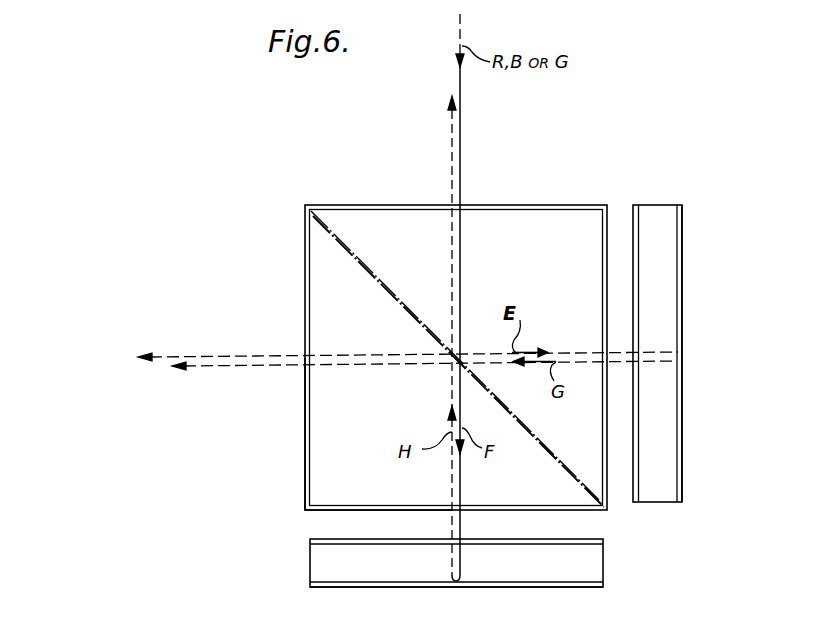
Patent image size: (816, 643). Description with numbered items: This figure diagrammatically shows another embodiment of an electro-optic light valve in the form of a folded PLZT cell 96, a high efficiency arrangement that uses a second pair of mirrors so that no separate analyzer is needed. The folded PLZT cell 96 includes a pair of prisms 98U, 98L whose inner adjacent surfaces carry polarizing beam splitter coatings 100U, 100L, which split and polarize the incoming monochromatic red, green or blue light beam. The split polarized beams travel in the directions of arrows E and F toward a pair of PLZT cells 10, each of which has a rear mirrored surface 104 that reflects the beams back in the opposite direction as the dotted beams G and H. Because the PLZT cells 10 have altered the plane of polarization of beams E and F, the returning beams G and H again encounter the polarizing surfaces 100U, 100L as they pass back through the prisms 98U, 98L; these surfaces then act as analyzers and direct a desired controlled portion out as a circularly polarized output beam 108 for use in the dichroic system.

The folded PLZT cell 96 is at (513, 175).
The upper prism 98U is at (552, 232).
The lower prism 98L is at (328, 456).
The upper polarizing beam splitter coating 100U is at (350, 240).
The lower polarizing beam splitter coating 100L is at (338, 245).
The rear mirrored surface 104 is at (680, 224).
The PLZT cell 10 is at (663, 490).
The circularly polarized output beam 108 is at (170, 359).